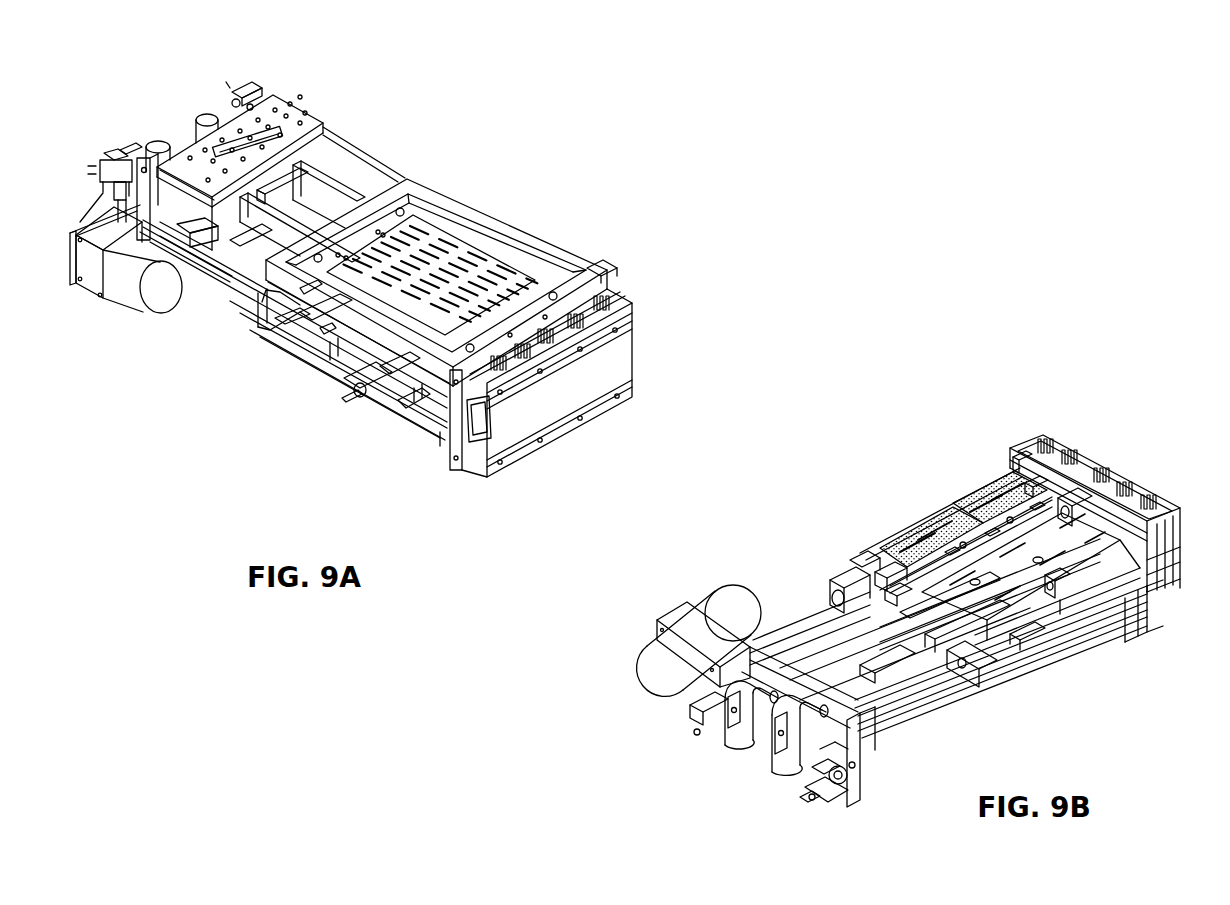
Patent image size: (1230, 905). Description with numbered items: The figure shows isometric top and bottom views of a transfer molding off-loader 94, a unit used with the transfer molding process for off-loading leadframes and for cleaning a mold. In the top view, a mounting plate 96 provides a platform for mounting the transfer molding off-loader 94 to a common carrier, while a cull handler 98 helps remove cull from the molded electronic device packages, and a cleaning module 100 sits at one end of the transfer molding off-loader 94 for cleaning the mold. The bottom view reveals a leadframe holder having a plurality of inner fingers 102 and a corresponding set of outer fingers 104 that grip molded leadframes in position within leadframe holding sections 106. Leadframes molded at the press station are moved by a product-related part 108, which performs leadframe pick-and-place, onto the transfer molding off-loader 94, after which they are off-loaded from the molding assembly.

In FIG. 9A, the transfer molding off-loader 94 is at (596, 128).
In FIG. 9B, the transfer molding off-loader 94 is at (1162, 383).
In FIG. 9A, the mounting plate 96 is at (305, 113).
In FIG. 9A, the cull handler 98 is at (522, 278).
In FIG. 9A, the cleaning module 100 is at (628, 300).
In FIG. 9B, the inner fingers 102 is at (1026, 502).
In FIG. 9B, the outer fingers 104 is at (1014, 596).
In FIG. 9B, the leadframe holding sections 106 is at (1040, 480).
In FIG. 9B, the product-related part 108 is at (877, 569).